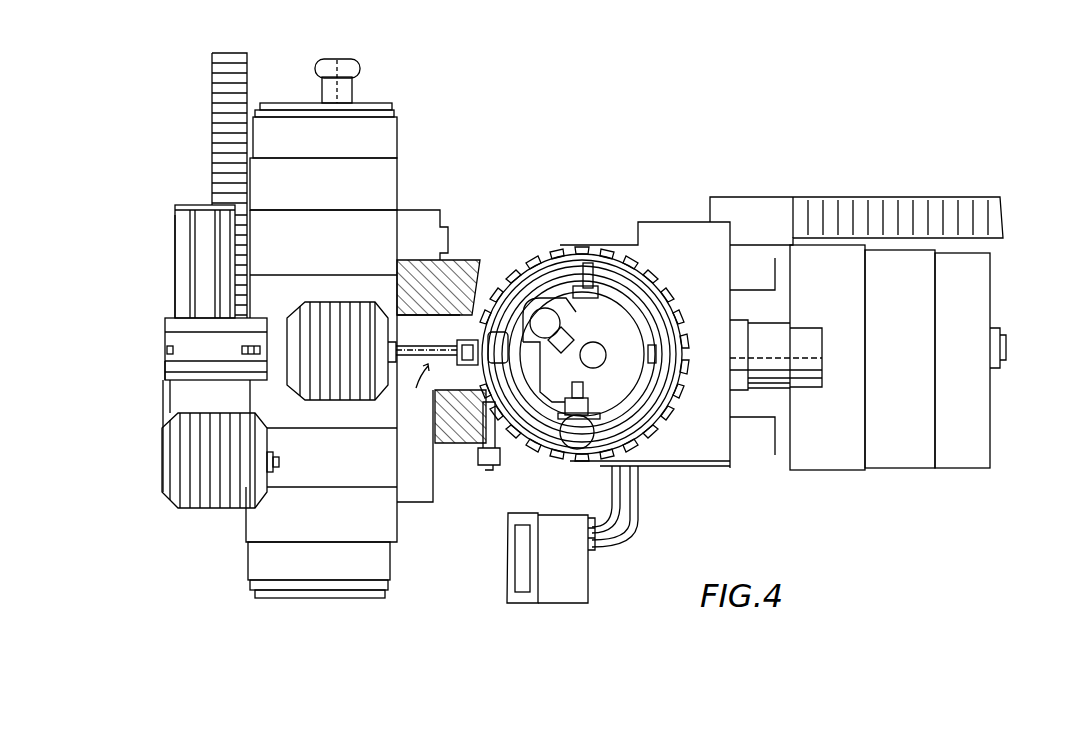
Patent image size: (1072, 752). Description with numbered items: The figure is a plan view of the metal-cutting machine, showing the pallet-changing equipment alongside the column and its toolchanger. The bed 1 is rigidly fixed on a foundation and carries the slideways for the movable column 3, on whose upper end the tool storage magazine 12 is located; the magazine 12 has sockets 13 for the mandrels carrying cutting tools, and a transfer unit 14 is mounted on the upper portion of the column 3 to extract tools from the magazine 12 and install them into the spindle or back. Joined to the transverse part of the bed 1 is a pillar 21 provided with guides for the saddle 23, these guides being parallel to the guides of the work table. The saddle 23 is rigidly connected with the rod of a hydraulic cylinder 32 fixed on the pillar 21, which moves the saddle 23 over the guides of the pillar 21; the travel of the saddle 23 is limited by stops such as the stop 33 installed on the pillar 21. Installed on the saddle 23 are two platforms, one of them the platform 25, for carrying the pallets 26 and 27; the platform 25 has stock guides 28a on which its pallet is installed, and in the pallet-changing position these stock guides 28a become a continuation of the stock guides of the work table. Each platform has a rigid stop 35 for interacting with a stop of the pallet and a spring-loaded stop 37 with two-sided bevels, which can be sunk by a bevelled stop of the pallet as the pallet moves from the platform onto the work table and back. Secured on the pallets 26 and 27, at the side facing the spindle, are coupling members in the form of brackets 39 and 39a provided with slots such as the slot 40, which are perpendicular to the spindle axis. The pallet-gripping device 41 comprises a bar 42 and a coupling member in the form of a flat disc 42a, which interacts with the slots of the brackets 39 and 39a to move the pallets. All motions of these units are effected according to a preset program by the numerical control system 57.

The bed 1 is at (438, 442).
The movable column 3 is at (675, 262).
The tool storage magazine 12 is at (610, 275).
The sockets 13 is at (546, 255).
The transfer unit 14 is at (463, 300).
The pillar 21 is at (184, 247).
The saddle 23 is at (180, 398).
The platform 25 is at (183, 342).
The pallet 26 is at (205, 452).
The pallet 27 is at (328, 305).
The stock guides 28a is at (178, 370).
The hydraulic cylinder 32 is at (202, 228).
The stop 33 is at (228, 213).
The rigid stop 35 is at (168, 351).
The spring-loaded stop 37 is at (253, 345).
The bracket 39 is at (270, 455).
The bracket 39a is at (392, 349).
The slot 40 is at (280, 462).
The pallet-gripping device 41 is at (420, 389).
The bar 42 is at (458, 332).
The flat disc 42a is at (395, 368).
The numerical control system 57 is at (520, 548).